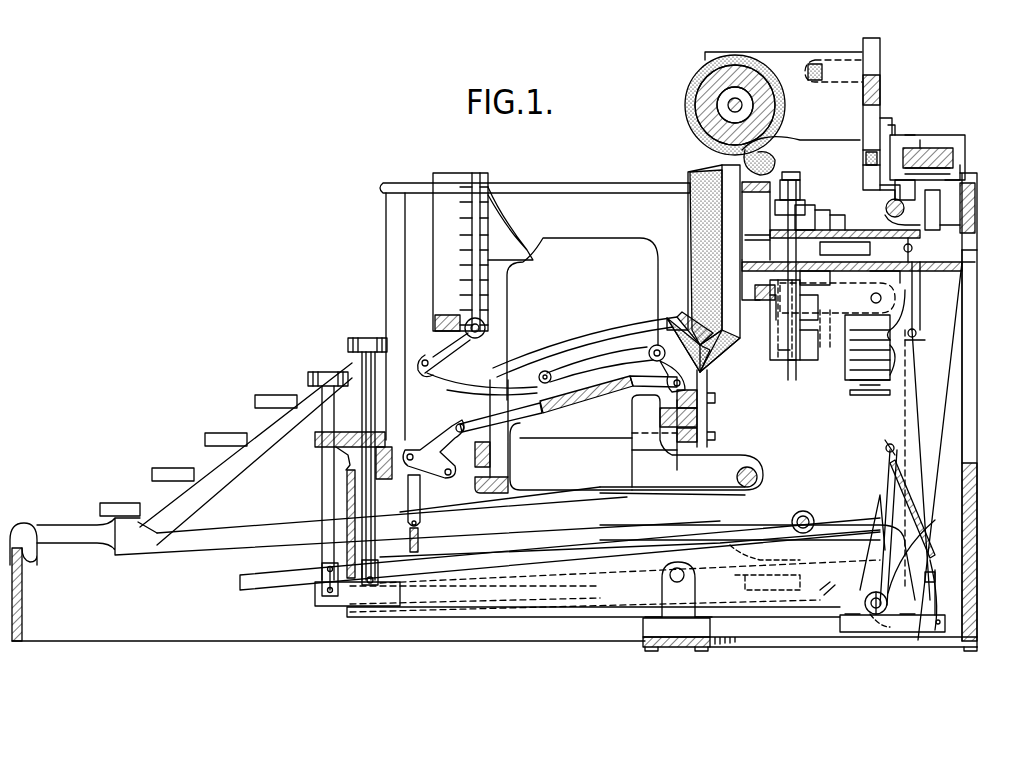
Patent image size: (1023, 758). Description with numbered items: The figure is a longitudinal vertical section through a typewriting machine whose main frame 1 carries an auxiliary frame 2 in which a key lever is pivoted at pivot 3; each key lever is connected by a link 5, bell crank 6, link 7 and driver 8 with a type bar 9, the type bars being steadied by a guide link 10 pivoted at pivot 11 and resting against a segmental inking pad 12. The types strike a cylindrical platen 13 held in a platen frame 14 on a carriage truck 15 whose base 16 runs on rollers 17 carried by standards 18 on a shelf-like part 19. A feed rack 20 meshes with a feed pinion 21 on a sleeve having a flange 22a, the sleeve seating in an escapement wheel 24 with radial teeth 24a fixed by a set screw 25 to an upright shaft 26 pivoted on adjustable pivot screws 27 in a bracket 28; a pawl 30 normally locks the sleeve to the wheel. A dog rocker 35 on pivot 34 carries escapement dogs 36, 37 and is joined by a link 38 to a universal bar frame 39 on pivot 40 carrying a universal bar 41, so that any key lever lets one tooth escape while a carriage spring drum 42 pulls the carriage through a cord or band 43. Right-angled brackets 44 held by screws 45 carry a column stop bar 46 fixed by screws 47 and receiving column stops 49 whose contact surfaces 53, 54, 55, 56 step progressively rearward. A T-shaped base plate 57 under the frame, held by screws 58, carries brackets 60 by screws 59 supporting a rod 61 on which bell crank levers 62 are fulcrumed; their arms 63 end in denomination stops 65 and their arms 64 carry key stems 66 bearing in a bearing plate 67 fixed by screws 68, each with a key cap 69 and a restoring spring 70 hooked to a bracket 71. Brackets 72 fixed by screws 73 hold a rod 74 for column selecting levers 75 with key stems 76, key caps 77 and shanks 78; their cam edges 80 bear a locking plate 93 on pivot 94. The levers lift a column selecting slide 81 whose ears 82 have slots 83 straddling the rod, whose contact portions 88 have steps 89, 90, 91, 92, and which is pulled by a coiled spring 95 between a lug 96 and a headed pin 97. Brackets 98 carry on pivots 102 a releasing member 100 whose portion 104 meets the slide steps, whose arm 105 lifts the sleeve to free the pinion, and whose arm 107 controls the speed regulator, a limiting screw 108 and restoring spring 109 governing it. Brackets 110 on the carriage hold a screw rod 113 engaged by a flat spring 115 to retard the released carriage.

The main frame 1 is at (212, 641).
The auxiliary frame 2 is at (572, 442).
The pivot 3 is at (758, 478).
The link 5 is at (412, 497).
The bell crank 6 is at (422, 455).
The link 7 is at (612, 395).
The driver 8 is at (612, 355).
The type bar 9 is at (558, 365).
The guide link 10 is at (445, 354).
The pivot 11 is at (485, 328).
The segmental inking pad 12 is at (688, 229).
The cylindrical platen 13 is at (697, 78).
The platen frame 14 is at (778, 60).
The carriage truck 15 is at (868, 118).
The base 16 is at (838, 212).
The rollers 17 is at (768, 206).
The standards 18 is at (770, 246).
The shelf-like part 19 is at (770, 271).
The feed rack 20 is at (800, 210).
The feed pinion 21 is at (805, 185).
The flange 22a is at (818, 210).
The escapement wheel 24 is at (775, 326).
The radial teeth 24a is at (770, 301).
The set screw 25 is at (805, 329).
The upright shaft 26 is at (778, 351).
The adjustable pivot screws 27 is at (790, 175).
The bracket 28 is at (800, 353).
The pawl 30 is at (770, 297).
The pivot 34 is at (887, 292).
The dog rocker 35 is at (912, 301).
The escapement dog 36 is at (825, 342).
The escapement dog 37 is at (838, 277).
The link 38 is at (910, 416).
The universal bar frame 39 is at (840, 522).
The pivot 40 is at (803, 512).
The universal bar 41 is at (412, 552).
The carriage spring drum 42 is at (855, 391).
The cord or band 43 is at (862, 248).
The right-angled brackets 44 is at (884, 118).
The screws 45 is at (895, 128).
The column stop bar 46 is at (925, 150).
The screws 47 is at (912, 138).
The column stop 49 is at (928, 140).
The contact surface 53 is at (898, 190).
The contact surface 54 is at (945, 160).
The contact surface 55 is at (935, 200).
The contact surface 56 is at (960, 170).
The T-shaped base plate 57 is at (787, 643).
The screws 58 is at (700, 648).
The screws 59 is at (850, 613).
The brackets 60 is at (918, 633).
The rod 61 is at (877, 614).
The bell crank levers 62 is at (828, 590).
The arms 63 is at (933, 386).
The arms 64 is at (442, 614).
The denomination stop 65 is at (983, 186).
The key stem 66 is at (322, 555).
The bearing plate 67 is at (315, 442).
The screws 68 is at (388, 447).
The key cap 69 is at (320, 372).
The restoring spring 70 is at (345, 494).
The bracket 71 is at (340, 463).
The brackets 72 is at (643, 628).
The screws 73 is at (650, 615).
The rod 74 is at (680, 572).
The column selecting levers 75 is at (572, 582).
The key stems 76 is at (372, 560).
The key caps 77 is at (362, 340).
The shanks 78 is at (378, 383).
The cam edges 80 is at (920, 563).
The column selecting slide 81 is at (880, 477).
The ears 82 is at (860, 586).
The slots 83 is at (890, 636).
The contact portions 88 is at (895, 366).
The step 89 is at (916, 334).
The step 90 is at (925, 346).
The step 91 is at (928, 357).
The step 92 is at (870, 396).
The locking plate 93 is at (935, 599).
The pivot 94 is at (938, 630).
The coiled spring 95 is at (918, 511).
The lug 96 is at (885, 451).
The headed pin 97 is at (935, 578).
The brackets 98 is at (905, 246).
The releasing member 100 is at (920, 283).
The pivots 102 is at (965, 220).
The downwardly and forwardly extending portion 104 is at (888, 331).
The arm 105 is at (790, 215).
The arm 107 is at (975, 254).
The limiting screw 108 is at (838, 229).
The restoring spring 109 is at (855, 290).
The brackets 110 is at (910, 221).
The screw rod 113 is at (908, 206).
The flat spring 115 is at (895, 190).